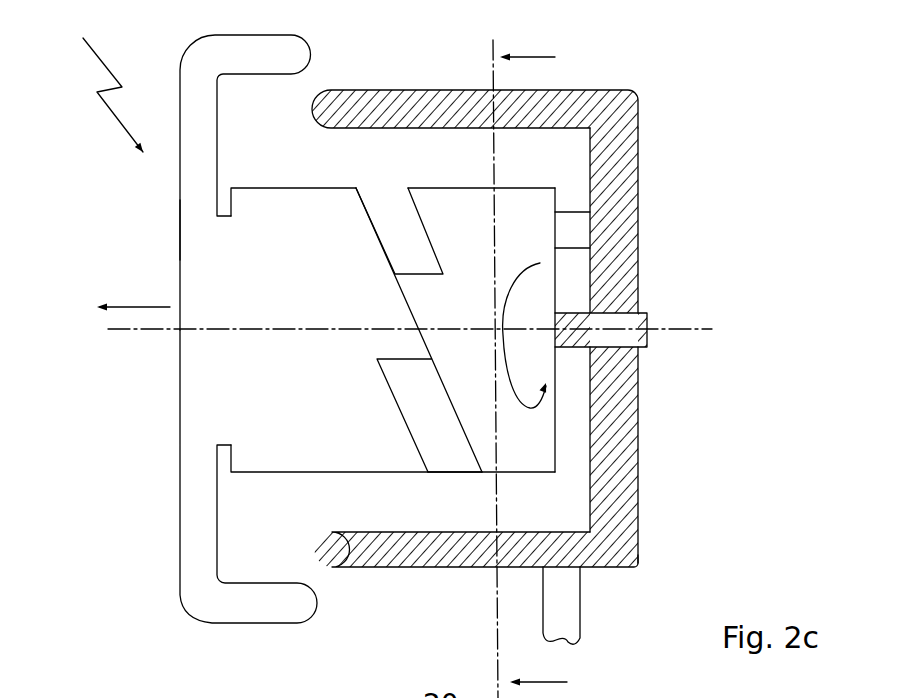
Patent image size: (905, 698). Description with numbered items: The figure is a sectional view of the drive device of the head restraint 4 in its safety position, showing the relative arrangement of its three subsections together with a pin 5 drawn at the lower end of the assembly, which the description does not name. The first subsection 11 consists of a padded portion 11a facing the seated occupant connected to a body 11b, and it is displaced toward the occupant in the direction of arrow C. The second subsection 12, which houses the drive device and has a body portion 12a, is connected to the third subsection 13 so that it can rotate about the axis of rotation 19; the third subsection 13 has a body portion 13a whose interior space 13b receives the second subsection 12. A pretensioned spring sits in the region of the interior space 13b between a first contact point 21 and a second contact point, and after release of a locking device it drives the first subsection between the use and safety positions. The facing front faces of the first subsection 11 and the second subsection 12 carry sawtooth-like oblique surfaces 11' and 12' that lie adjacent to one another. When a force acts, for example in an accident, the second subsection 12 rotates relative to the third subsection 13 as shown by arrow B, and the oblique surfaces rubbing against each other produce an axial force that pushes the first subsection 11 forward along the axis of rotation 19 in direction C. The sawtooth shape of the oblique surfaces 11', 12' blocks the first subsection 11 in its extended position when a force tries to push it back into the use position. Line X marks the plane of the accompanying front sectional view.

The head restraint 4 is at (103, 81).
The connecting pin 5 is at (563, 615).
The first subsection 11 is at (197, 329).
The padded portion 11a is at (180, 222).
The body 11b is at (265, 186).
The oblique surface 11' is at (384, 137).
The second subsection 12 is at (628, 349).
The oblique surface 12' is at (419, 237).
The body portion 12a is at (480, 473).
The third subsection 13 is at (638, 190).
The body portion 13a is at (638, 125).
The interior space 13b is at (583, 90).
The axis of rotation 19 is at (667, 328).
The first contact point 21 is at (572, 230).
The arrow B is at (524, 335).
The direction C is at (133, 295).
The line X- X is at (533, 358).